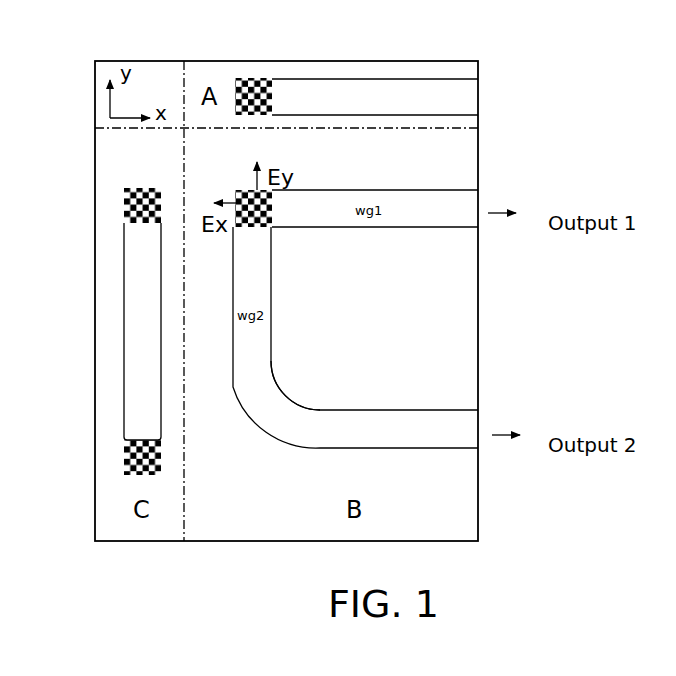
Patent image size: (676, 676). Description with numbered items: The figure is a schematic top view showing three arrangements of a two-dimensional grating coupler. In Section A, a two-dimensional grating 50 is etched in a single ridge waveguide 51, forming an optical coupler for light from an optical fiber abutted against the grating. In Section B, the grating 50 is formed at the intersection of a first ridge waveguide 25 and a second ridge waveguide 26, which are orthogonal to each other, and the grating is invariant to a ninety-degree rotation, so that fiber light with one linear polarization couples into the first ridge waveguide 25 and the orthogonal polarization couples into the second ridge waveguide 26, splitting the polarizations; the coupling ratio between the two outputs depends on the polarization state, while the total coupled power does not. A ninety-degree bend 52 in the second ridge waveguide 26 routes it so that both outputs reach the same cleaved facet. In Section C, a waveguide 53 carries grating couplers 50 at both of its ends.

The two-dimensional grating 50 is at (247, 80).
The ridge waveguide 51 is at (343, 88).
The ridge waveguide 25 is at (447, 198).
The ridge waveguide 26 is at (364, 438).
The 90-degree bend 52 is at (305, 373).
The waveguide 53 is at (130, 302).